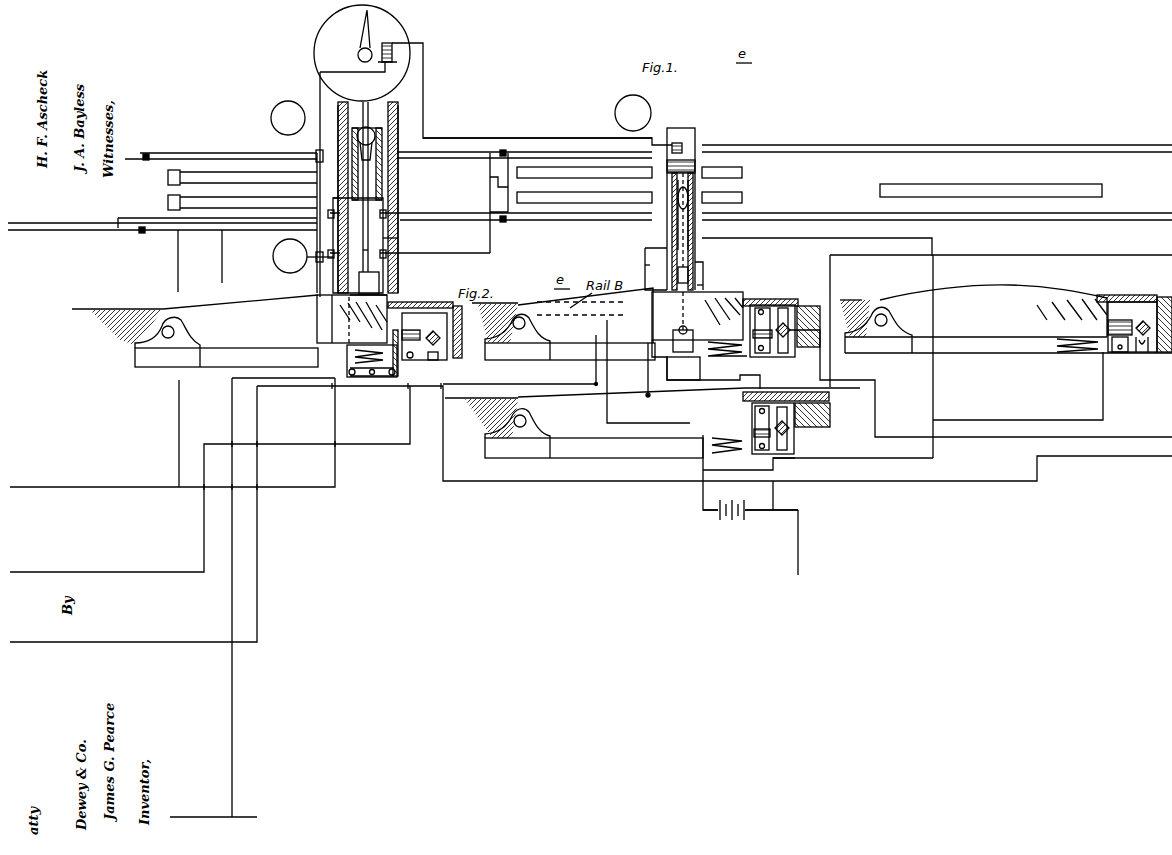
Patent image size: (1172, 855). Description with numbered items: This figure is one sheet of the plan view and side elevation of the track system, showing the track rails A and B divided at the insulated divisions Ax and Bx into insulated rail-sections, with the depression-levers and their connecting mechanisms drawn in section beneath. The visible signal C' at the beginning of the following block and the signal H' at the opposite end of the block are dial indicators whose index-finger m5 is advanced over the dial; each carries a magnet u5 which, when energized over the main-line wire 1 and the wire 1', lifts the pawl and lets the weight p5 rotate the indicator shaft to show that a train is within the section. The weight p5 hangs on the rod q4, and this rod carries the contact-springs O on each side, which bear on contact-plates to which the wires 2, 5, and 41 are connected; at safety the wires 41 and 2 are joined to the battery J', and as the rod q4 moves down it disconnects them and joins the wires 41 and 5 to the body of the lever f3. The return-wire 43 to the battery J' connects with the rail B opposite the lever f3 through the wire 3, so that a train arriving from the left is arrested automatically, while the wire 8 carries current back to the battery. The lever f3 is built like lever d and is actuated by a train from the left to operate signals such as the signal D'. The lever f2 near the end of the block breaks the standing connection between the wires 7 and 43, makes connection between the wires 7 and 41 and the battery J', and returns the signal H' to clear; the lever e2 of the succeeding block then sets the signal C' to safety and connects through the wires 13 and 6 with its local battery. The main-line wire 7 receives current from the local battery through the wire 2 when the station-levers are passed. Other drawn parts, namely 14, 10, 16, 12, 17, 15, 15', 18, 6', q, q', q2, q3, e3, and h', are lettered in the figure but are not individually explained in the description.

In FIG. 1E, the signal C' is at (471, 151).
In FIG. 1E, the indicator m5 is at (360, 27).
In FIG. 1E, the magnet u5 is at (388, 41).
In FIG. 1E, the conductor wire 14 is at (347, 72).
In FIG. 2E, the conductor wire 14 is at (232, 408).
In FIG. 1E, the contact-spring O is at (380, 136).
In FIG. 1E, the outer cylinder wall q2 is at (354, 170).
In FIG. 1E, the outer cylinder wall q3 is at (382, 170).
In FIG. 1E, the conductor wire 10 is at (338, 198).
In FIG. 2E, the conductor wire 10 is at (162, 487).
In FIG. 1E, the conductor wire 16 is at (222, 217).
In FIG. 1E, the wire 13 is at (386, 238).
In FIG. 2E, the wire 13 is at (392, 336).
In FIG. 1E, the rod q4 is at (372, 259).
In FIG. 1E, the weight p5 is at (373, 283).
In FIG. 1E, the insulated division Ax is at (146, 157).
In FIG. 1E, the lever e2 is at (168, 178).
In FIG. 2E, the lever e2 is at (245, 318).
In FIG. 1E, the contact rail e3 is at (168, 203).
In FIG. 1E, the insulated division Bx is at (146, 232).
In FIG. 1E, the conductor wire 17 is at (177, 263).
In FIG. 2E, the conductor wire 17 is at (180, 430).
In FIG. 1E, the conductor wire 12 is at (222, 266).
In FIG. 1E, the signal D' is at (294, 256).
In FIG. 1E, the wire 1' is at (545, 205).
In FIG. 2E, the wire 1' is at (741, 359).
In FIG. 1E, the switch contact 18 is at (490, 177).
In FIG. 2E, the switch contact 18 is at (597, 381).
In FIG. 1E, the conductor wire 15' is at (445, 259).
In FIG. 1E, the lever f2 is at (629, 170).
In FIG. 2E, the lever f2 is at (563, 324).
In FIG. 1E, the lever f3 is at (629, 196).
In FIG. 2E, the lever f3 is at (652, 423).
In FIG. 1E, the signal H' is at (663, 192).
In FIG. 1E, the cylinder wall q' is at (664, 214).
In FIG. 1E, the cylinder wall q is at (702, 215).
In FIG. 1E, the wire 2 is at (712, 237).
In FIG. 2E, the wire 2 is at (852, 462).
In FIG. 1E, the wire 5 is at (650, 268).
In FIG. 2E, the wire 5 is at (648, 368).
In FIG. 1E, the wire 41 is at (699, 287).
In FIG. 2E, the wire 41 is at (724, 357).
In FIG. 1E, the track rail A is at (848, 145).
In FIG. 1E, the track rail B is at (843, 215).
In FIG. 1E, the contact rail h' is at (991, 180).
In FIG. 2E, the contact rail h' is at (1006, 312).
In FIG. 1E, the main-line wire 1 is at (939, 265).
In FIG. 2E, the main-line wire 1 is at (881, 356).
In FIG. 2E, the wire 3 is at (640, 423).
In FIG. 2E, the wire 6 is at (714, 424).
In FIG. 2E, the conductor wire 6' is at (853, 477).
In FIG. 2E, the main-line wire 7 is at (820, 365).
In FIG. 2E, the return-wire 43 is at (752, 332).
In FIG. 2E, the battery J' is at (750, 523).
In FIG. 2E, the wire 8 is at (798, 570).
In FIG. 2E, the conductor wire 15 is at (303, 504).